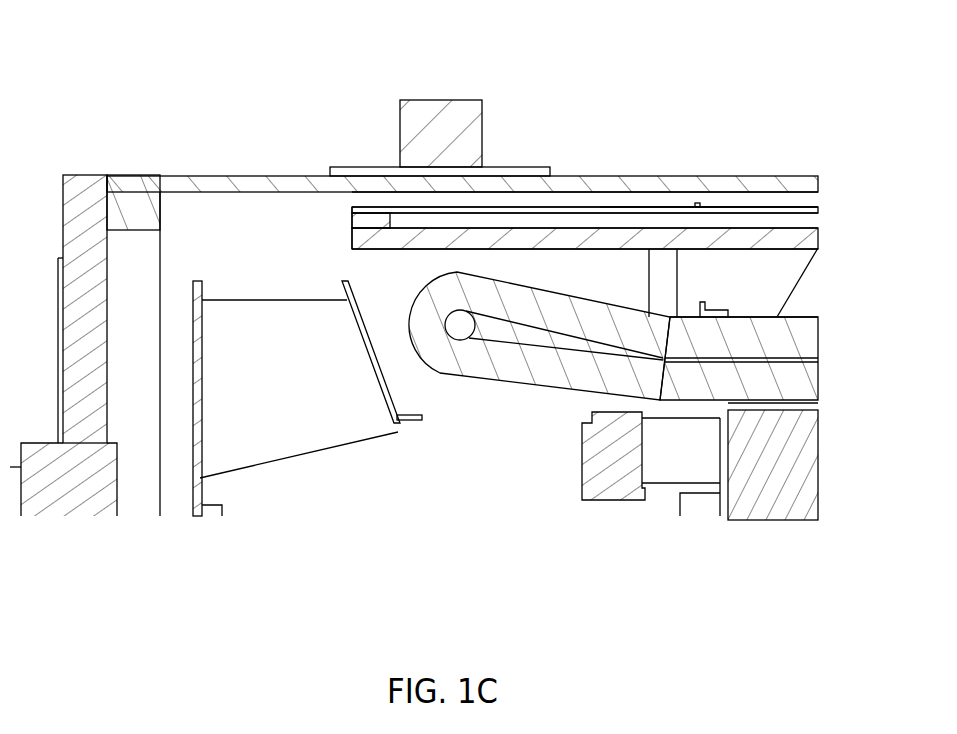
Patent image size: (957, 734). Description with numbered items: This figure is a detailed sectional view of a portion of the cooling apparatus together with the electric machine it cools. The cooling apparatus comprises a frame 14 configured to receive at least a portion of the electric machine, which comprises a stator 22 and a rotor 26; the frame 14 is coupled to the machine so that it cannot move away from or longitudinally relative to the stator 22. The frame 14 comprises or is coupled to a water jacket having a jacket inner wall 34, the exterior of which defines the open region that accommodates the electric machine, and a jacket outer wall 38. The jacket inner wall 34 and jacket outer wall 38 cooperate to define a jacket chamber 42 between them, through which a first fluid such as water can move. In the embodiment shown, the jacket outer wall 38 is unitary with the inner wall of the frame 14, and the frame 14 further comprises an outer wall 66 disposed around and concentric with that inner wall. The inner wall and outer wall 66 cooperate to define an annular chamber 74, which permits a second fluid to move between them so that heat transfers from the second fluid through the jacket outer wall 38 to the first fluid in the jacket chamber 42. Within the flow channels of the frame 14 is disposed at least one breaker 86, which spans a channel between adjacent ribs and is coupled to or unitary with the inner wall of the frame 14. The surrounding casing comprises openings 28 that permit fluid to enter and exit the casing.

The frame 14 is at (282, 110).
The stator 22 is at (788, 280).
The rotor 26 is at (787, 463).
The openings 28 is at (437, 115).
The jacket inner wall 34 is at (793, 243).
The jacket outer wall 38 is at (805, 208).
The jacket chamber 42 is at (595, 227).
The outer wall 66 is at (790, 212).
The annular chamber 74 is at (663, 200).
The breaker 86 is at (697, 203).